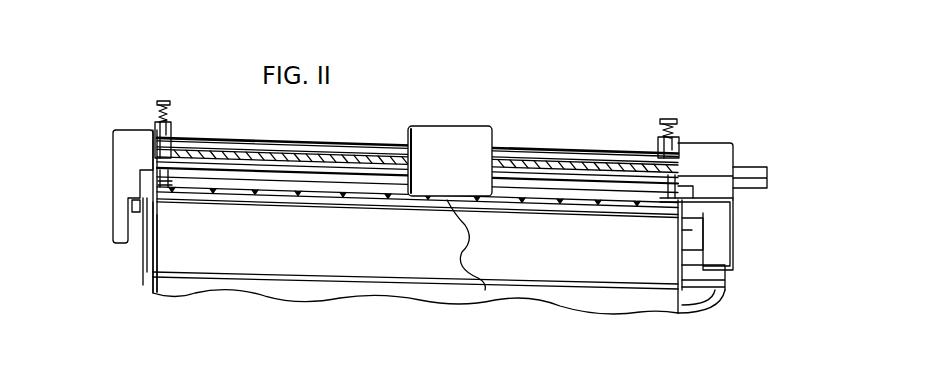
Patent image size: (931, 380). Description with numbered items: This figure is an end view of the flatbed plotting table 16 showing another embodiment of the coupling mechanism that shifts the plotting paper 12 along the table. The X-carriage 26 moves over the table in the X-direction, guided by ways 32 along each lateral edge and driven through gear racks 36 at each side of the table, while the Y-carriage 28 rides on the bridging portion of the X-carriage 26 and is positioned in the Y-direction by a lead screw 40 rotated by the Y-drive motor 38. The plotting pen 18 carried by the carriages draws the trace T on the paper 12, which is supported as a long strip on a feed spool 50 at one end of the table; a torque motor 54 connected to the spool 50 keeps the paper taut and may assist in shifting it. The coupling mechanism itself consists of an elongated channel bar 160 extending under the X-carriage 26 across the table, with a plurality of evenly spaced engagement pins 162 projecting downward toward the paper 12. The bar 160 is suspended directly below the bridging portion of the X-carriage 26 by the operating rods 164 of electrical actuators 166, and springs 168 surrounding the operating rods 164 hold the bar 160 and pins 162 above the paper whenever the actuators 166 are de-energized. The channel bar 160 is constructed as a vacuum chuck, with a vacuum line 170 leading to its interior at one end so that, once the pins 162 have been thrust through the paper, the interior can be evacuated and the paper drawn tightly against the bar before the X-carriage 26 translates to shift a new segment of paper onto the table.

The plotting paper 12 is at (326, 278).
The flatbed plotting table 16 is at (130, 122).
The plotting pen 18 is at (448, 201).
The X-carriage 26 is at (281, 140).
The Y-carriage 28 is at (447, 134).
The ways 32 is at (146, 182).
The gear racks 36 is at (138, 205).
The Y-drive motor 38 is at (741, 168).
The lead screw 40 is at (530, 160).
The feed spool 50 is at (665, 280).
The torque motor 54 is at (727, 285).
The channel bar 160 is at (240, 186).
The engagement pins 162 is at (342, 194).
The operating rods 164 is at (168, 170).
The electrical actuators 166 is at (174, 128).
The springs 168 is at (156, 119).
The vacuum line 170 is at (733, 230).
The trace T is at (463, 252).